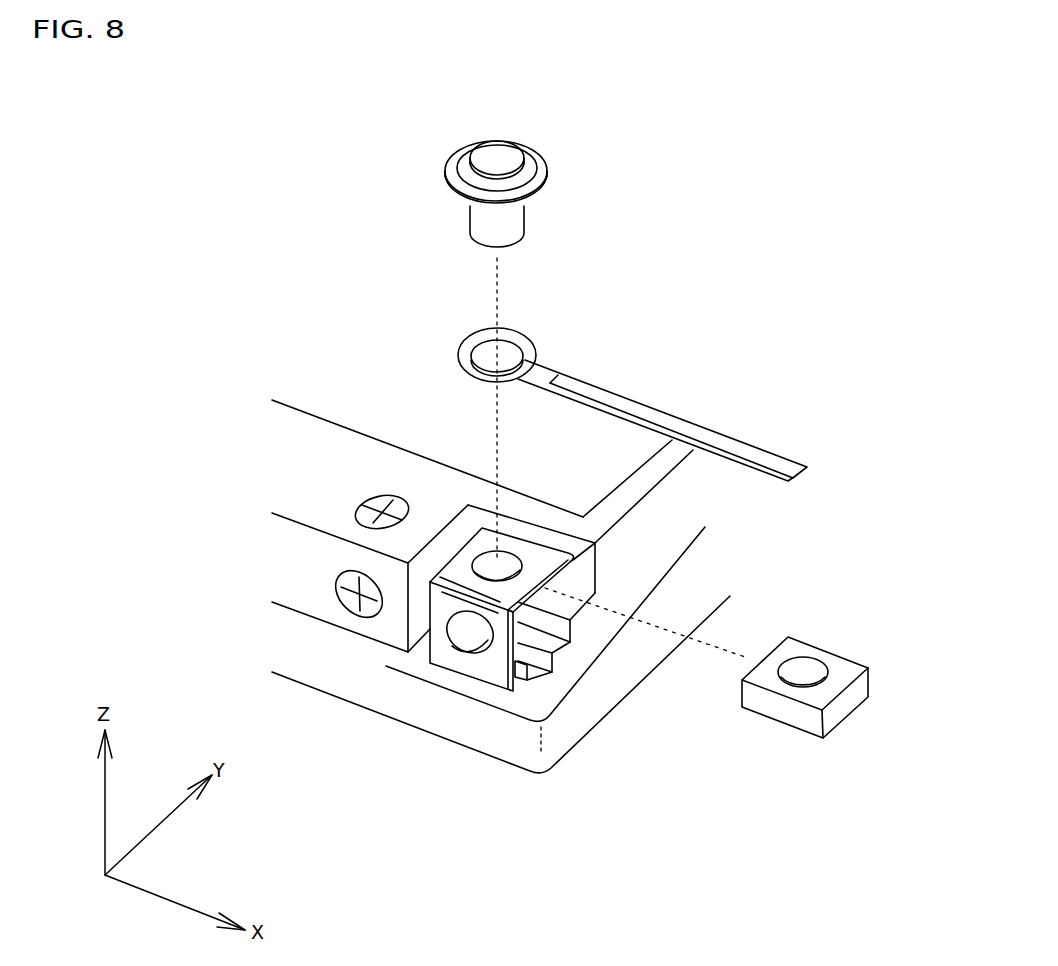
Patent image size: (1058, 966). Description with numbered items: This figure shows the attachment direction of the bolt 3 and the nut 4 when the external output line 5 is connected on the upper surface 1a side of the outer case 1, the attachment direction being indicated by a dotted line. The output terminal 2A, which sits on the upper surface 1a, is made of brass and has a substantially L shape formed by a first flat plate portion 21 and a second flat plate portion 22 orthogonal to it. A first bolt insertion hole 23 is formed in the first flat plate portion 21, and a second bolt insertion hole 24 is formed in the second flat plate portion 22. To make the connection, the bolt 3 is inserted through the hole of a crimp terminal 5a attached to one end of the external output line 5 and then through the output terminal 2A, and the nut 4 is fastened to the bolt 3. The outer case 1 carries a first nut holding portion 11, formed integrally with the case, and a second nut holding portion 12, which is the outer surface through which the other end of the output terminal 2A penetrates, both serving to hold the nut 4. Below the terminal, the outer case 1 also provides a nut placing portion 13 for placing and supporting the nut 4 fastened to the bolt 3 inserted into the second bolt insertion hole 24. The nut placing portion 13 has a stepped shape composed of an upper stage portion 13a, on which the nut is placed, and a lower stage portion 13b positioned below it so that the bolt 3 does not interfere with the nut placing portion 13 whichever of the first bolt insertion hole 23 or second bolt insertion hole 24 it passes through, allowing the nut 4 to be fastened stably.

The outer case 1 is at (684, 492).
The upper surface 1a is at (300, 622).
The first nut holding portion 11 is at (530, 672).
The second nut holding portion 12 is at (637, 649).
The nut placing portion 13 is at (633, 674).
The upper stage portion 13a is at (570, 603).
The lower stage portion 13b is at (553, 650).
The output terminal 2A is at (421, 596).
The first flat plate portion 21 is at (430, 699).
The second flat plate portion 22 is at (497, 491).
The first bolt insertion hole 23 is at (431, 664).
The second bolt insertion hole 24 is at (488, 552).
The bolt 3 is at (460, 148).
The nut 4 is at (840, 651).
The external output line 5 is at (575, 377).
The crimp terminal 5a is at (462, 337).